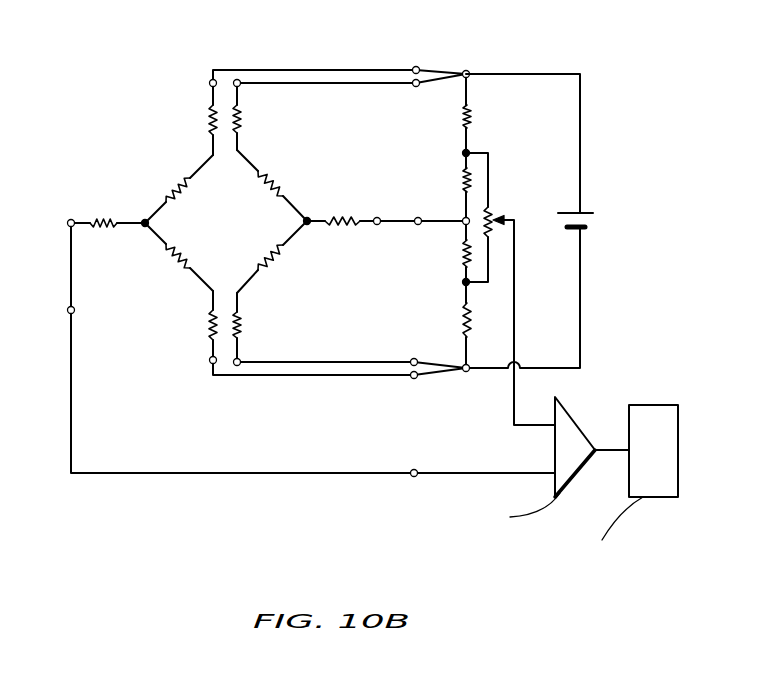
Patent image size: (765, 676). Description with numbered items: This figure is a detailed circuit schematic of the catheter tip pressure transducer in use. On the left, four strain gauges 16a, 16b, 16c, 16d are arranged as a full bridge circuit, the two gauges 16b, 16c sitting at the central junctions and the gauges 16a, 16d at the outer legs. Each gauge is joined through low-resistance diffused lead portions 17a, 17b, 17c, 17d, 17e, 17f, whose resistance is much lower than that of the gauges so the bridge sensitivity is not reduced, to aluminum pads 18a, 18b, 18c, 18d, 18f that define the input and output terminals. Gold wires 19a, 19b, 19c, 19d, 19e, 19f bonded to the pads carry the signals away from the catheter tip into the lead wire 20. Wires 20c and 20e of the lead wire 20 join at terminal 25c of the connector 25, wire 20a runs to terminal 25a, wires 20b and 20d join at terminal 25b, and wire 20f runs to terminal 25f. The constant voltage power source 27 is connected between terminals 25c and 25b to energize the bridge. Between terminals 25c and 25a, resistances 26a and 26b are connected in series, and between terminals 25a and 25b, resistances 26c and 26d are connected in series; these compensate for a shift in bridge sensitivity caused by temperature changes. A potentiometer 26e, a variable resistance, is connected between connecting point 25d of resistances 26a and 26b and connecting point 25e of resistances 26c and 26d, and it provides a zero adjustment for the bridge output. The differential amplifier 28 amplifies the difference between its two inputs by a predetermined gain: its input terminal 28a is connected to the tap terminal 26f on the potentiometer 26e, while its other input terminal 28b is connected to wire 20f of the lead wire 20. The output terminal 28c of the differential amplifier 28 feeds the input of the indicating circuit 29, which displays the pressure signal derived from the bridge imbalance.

The strain gauge 16a is at (273, 265).
The strain gauge 16b is at (276, 181).
The strain gauge 16c is at (170, 262).
The strain gauge 16d is at (176, 186).
The lead portion 17a is at (362, 220).
The lead portion 17b is at (241, 330).
The lead portion 17c is at (244, 122).
The lead portion 17d is at (210, 320).
The lead portion 17e is at (210, 112).
The lead portion 17f is at (96, 220).
The aluminum pad 18a is at (209, 84).
The aluminum pad 18b is at (243, 362).
The aluminum pad 18c is at (238, 87).
The aluminum pad 18d is at (210, 362).
The aluminum pad 18f is at (67, 223).
The gold wire 19a is at (390, 223).
The gold wire 19b is at (342, 361).
The gold wire 19c is at (288, 85).
The gold wire 19d is at (340, 376).
The gold wire 19e is at (312, 66).
The gold wire 19f is at (68, 277).
The lead wire 20 is at (412, 62).
The wire 20a is at (418, 218).
The wire 20b is at (420, 360).
The wire 20c is at (415, 87).
The wire 20d is at (432, 377).
The wire 20e is at (424, 66).
The wire 20f is at (74, 410).
The connector 25 is at (480, 74).
The terminal 25a is at (464, 219).
The terminal 25b is at (468, 372).
The terminal 25c is at (470, 72).
The connecting point 25d is at (462, 153).
The connecting point 25e is at (463, 282).
The terminal 25f is at (413, 470).
The resistance 26a is at (463, 118).
The resistance 26b is at (462, 180).
The resistance 26c is at (462, 253).
The resistance 26d is at (464, 303).
The potentiometer 26e is at (490, 206).
The terminal 26f is at (512, 214).
The constant voltage power source 27 is at (590, 221).
The differential amplifier 28 is at (572, 418).
The input terminal 28a is at (556, 422).
The input terminal 28b is at (555, 470).
The output terminal 28c is at (594, 456).
The indicating circuit 29 is at (660, 410).